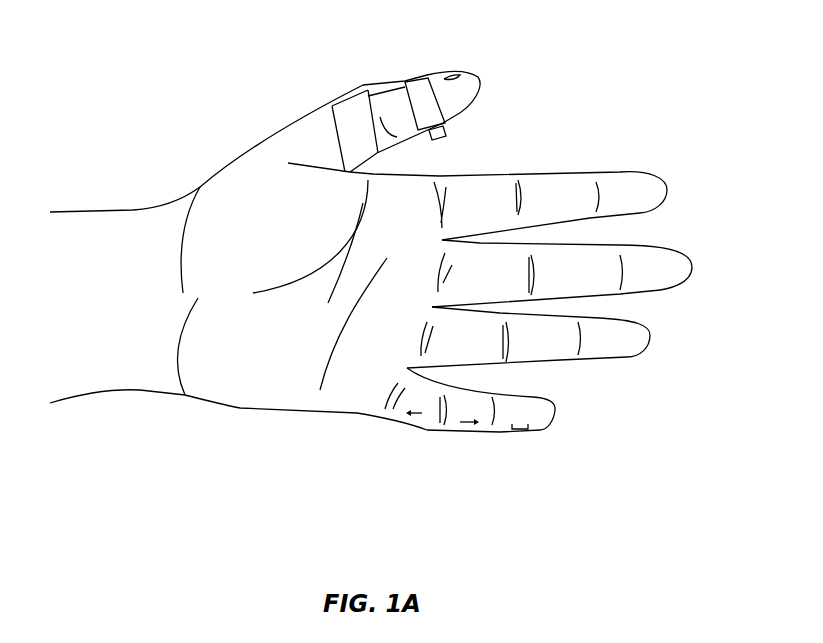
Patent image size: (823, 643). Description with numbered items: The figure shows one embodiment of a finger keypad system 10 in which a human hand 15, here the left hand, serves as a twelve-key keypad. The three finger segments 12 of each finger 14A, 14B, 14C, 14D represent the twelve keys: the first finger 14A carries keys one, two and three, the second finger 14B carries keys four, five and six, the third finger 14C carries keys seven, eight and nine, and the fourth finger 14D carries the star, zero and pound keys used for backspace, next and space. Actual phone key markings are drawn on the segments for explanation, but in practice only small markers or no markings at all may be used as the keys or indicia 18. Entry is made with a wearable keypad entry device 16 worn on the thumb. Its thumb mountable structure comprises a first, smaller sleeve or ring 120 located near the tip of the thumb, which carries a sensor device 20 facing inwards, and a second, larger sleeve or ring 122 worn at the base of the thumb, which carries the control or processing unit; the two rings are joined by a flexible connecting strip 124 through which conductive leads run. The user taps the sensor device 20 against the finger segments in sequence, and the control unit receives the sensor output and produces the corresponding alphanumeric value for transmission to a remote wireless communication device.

The finger keypad system 10 is at (655, 50).
The finger segments 12 is at (497, 182).
The first finger 14A is at (668, 190).
The second finger 14B is at (693, 268).
The third finger 14C is at (648, 333).
The fourth finger 14D is at (557, 410).
The human hand 15 is at (224, 164).
The wearable keypad entry device 16 is at (433, 57).
The keys or indicia 18 is at (417, 420).
The sensor device 20 is at (440, 136).
The first sleeve or ring 120 is at (420, 87).
The second sleeve or ring 122 is at (322, 122).
The flexible connecting strip 124 is at (368, 92).